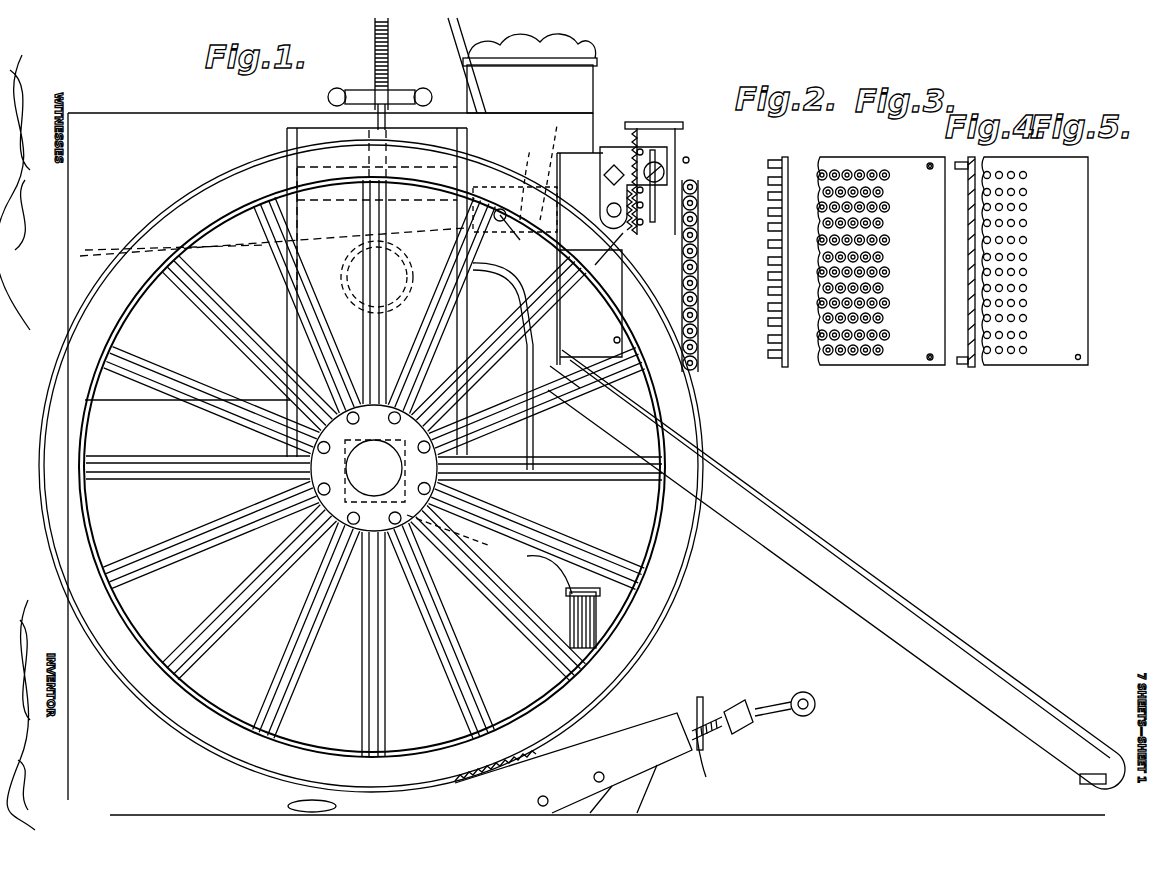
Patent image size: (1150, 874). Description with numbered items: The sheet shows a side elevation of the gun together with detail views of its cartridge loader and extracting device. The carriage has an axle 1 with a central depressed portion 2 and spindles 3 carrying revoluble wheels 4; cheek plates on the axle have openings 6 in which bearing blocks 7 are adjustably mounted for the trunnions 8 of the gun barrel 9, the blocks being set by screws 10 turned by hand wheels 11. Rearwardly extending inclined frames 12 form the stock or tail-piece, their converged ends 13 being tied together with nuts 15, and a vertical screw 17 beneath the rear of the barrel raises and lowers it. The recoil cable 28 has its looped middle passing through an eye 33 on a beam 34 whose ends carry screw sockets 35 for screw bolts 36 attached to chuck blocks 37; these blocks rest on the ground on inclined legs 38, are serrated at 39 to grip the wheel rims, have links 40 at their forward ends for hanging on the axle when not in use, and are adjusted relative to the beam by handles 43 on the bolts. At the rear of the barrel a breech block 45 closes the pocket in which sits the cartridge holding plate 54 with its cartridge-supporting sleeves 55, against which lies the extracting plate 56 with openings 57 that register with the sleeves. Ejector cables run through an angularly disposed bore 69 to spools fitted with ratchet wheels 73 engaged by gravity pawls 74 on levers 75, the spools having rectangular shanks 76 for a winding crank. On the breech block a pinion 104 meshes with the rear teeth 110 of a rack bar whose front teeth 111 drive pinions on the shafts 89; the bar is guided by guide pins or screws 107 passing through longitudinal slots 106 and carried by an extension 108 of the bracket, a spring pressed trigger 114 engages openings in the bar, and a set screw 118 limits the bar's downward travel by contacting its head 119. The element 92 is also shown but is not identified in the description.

In FIG. 1, the axle 1 is at (489, 554).
In FIG. 1, the central depressed portion 2 is at (295, 512).
In FIG. 1, the spindles 3 is at (374, 468).
In FIG. 1, the revoluble wheels 4 is at (78, 512).
In FIG. 1, the openings 6 is at (478, 160).
In FIG. 1, the bearing blocks 7 is at (377, 210).
In FIG. 1, the trunnions 8 is at (300, 283).
In FIG. 1, the gun barrel 9 is at (335, 456).
In FIG. 1, the screws 10 is at (390, 66).
In FIG. 1, the hand wheels 11 is at (350, 90).
In FIG. 1, the inclined frames 12 is at (650, 410).
In FIG. 1, the ends 13 is at (930, 605).
In FIG. 1, the nuts 15 is at (1100, 774).
In FIG. 1, the vertical screw 17 is at (570, 618).
In FIG. 1, the cable 28 is at (815, 708).
In FIG. 1, the eye 33 is at (780, 712).
In FIG. 1, the beam 34 is at (768, 730).
In FIG. 1, the screw sockets 35 is at (736, 700).
In FIG. 1, the screw bolts 36 is at (710, 768).
In FIG. 1, the chuck blocks 37 is at (628, 735).
In FIG. 1, the inclined legs 38 is at (655, 797).
In FIG. 1, the toothed or serrated portion 39 is at (512, 766).
In FIG. 1, the links 40 is at (290, 804).
In FIG. 1, the handles 43 is at (699, 700).
In FIG. 1, the breech block 45 is at (591, 303).
In FIG. 1, the cartridge holding plate 54 is at (525, 330).
In FIG. 2, the cartridge holding plate 54 is at (786, 366).
In FIG. 3, the cartridge holding plate 54 is at (881, 261).
In FIG. 2, the cartridge-supporting sleeves 55 is at (768, 350).
In FIG. 3, the cartridge-supporting sleeves 55 is at (865, 355).
In FIG. 1, the extracting plate 56 is at (540, 340).
In FIG. 5, the extracting plate 56 is at (1035, 261).
In FIG. 4, the openings 57 is at (962, 345).
In FIG. 5, the openings 57 is at (1030, 300).
In FIG. 1, the angularly disposed bore 69 is at (128, 248).
In FIG. 1, the ratchet wheels 73 is at (503, 222).
In FIG. 1, the gravity pawls 74 is at (533, 171).
In FIG. 1, the levers 75 is at (558, 170).
In FIG. 1, the rectangular shanks 76 is at (522, 225).
In FIG. 1, the shafts 89 is at (700, 272).
In FIG. 1, the chain 92 is at (700, 200).
In FIG. 1, the pinion 104 is at (604, 175).
In FIG. 1, the longitudinal slots 106 is at (656, 215).
In FIG. 1, the guide pins or screws 107 is at (665, 170).
In FIG. 1, the extension 108 is at (605, 198).
In FIG. 1, the teeth 110 is at (608, 252).
In FIG. 1, the teeth 111 is at (680, 150).
In FIG. 1, the spring pressed trigger 114 is at (688, 158).
In FIG. 1, the set screw 118 is at (630, 135).
In FIG. 1, the head 119 is at (660, 122).